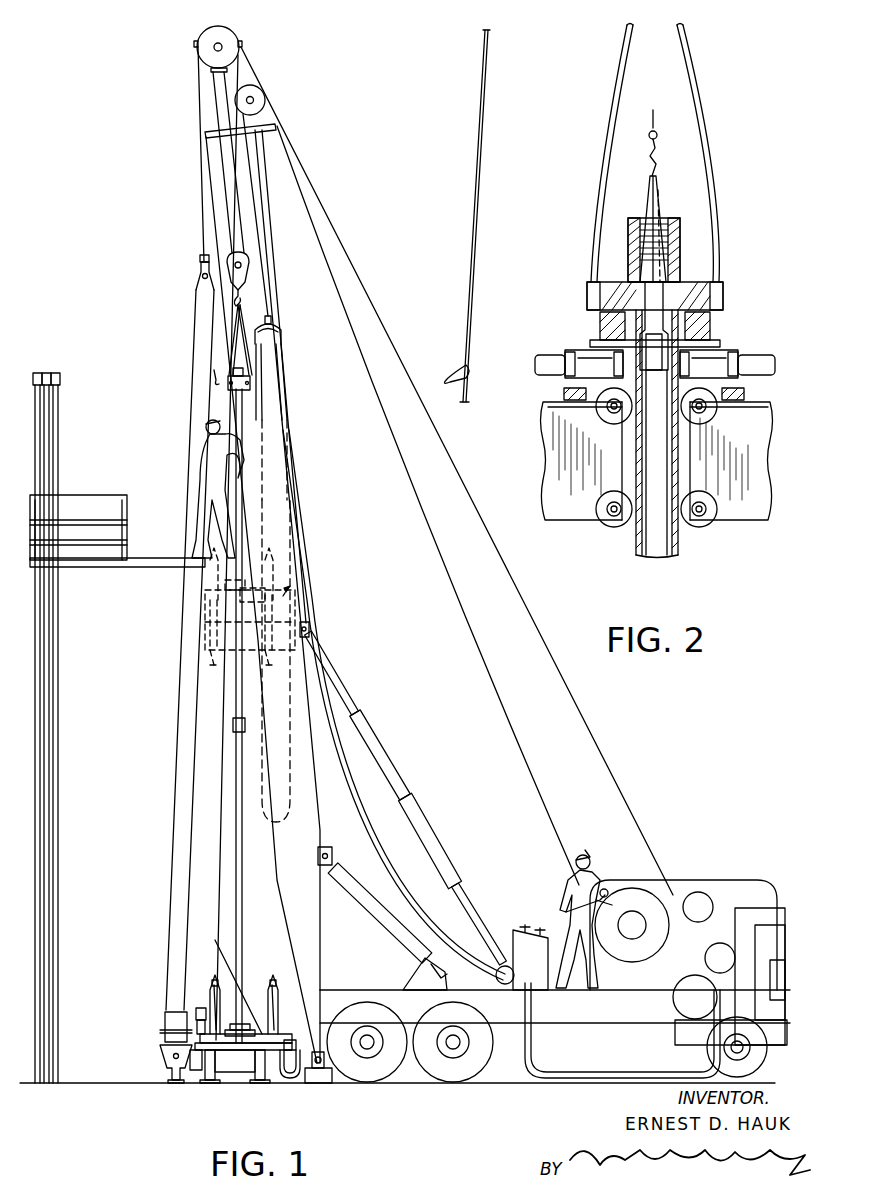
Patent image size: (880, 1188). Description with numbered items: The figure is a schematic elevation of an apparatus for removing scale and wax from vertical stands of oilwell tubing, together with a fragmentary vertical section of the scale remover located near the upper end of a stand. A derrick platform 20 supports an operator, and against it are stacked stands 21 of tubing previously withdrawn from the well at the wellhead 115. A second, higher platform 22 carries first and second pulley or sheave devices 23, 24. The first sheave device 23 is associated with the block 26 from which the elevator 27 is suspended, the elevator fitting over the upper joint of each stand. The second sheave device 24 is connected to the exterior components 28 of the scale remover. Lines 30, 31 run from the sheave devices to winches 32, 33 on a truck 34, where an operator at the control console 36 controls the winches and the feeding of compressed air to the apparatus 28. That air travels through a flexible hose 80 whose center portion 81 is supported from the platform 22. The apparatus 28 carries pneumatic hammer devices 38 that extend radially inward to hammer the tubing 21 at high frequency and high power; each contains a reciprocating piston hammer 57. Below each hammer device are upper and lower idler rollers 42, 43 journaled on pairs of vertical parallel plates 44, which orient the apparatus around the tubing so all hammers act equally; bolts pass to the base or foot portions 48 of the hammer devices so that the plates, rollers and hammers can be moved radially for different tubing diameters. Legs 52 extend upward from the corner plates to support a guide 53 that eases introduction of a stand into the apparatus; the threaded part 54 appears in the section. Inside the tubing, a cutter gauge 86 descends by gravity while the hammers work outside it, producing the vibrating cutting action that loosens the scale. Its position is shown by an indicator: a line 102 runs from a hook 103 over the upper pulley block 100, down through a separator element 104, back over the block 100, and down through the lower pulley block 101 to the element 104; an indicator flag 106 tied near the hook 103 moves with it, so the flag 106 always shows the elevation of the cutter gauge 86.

In FIG. 1, the platform 20 is at (120, 568).
In FIG. 1, the stands of tubing 21 is at (60, 668).
In FIG. 2, the stands of tubing 21 is at (680, 545).
In FIG. 1, the second platform 22 is at (205, 136).
In FIG. 1, the first pulley or sheave device 23 is at (239, 30).
In FIG. 1, the second pulley or sheave device 24 is at (265, 92).
In FIG. 1, the block 26 is at (250, 267).
In FIG. 1, the elevator 27 is at (252, 383).
In FIG. 2, the elevator 27 is at (722, 285).
In FIG. 1, the exterior components of the scale-remover apparatus 28 is at (293, 582).
In FIG. 1, the line 30 is at (405, 465).
In FIG. 1, the line 31 is at (470, 490).
In FIG. 1, the winch 32 is at (650, 948).
In FIG. 1, the winch 33 is at (706, 897).
In FIG. 1, the truck 34 is at (760, 868).
In FIG. 1, the control console 36 is at (520, 930).
In FIG. 2, the pneumatic hammer device 38 is at (553, 350).
In FIG. 2, the upper idler roller 42 is at (610, 423).
In FIG. 2, the lower idler roller 43 is at (615, 527).
In FIG. 2, the vertical parallel plates 44 is at (766, 440).
In FIG. 2, the base or foot portion 48 is at (560, 392).
In FIG. 2, the legs 52 is at (703, 345).
In FIG. 2, the guide 53 is at (714, 325).
In FIG. 1, the threaded bushing 54 is at (233, 725).
In FIG. 2, the threaded bushing 54 is at (680, 236).
In FIG. 1, the piston hammer 57 is at (282, 1082).
In FIG. 1, the flexible hose 80 is at (297, 478).
In FIG. 1, the center portion of hose 81 is at (282, 327).
In FIG. 1, the cutter gauge 86 is at (288, 972).
In FIG. 2, the cutter gauge 86 is at (660, 210).
In FIG. 1, the upper pulley block 100 is at (200, 268).
In FIG. 1, the lower pulley block 101 is at (170, 1062).
In FIG. 1, the line 102 is at (477, 175).
In FIG. 1, the hook 103 is at (212, 378).
In FIG. 2, the hook 103 is at (650, 155).
In FIG. 1, the separator element 104 is at (165, 1028).
In FIG. 1, the indicator flag 106 is at (205, 418).
In FIG. 1, the wellhead 115 is at (203, 1070).